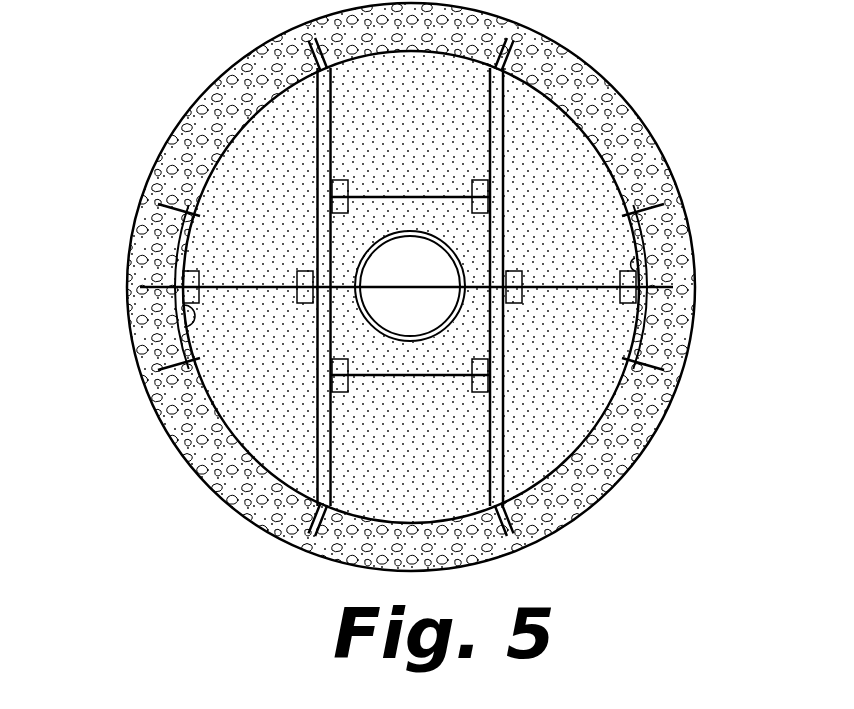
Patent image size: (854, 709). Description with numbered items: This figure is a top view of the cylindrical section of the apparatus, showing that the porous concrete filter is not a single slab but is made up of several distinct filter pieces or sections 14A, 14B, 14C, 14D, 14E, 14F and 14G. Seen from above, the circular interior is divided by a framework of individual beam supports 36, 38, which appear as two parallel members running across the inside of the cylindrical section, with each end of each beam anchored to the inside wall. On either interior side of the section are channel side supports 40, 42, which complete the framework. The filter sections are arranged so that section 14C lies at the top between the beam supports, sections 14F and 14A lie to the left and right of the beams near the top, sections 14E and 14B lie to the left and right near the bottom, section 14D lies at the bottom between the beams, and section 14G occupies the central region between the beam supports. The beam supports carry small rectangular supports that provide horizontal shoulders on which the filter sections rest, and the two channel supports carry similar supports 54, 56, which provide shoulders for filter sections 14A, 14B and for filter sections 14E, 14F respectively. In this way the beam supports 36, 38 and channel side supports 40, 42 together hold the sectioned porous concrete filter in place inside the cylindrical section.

The beam support 36 is at (506, 108).
The beam support 38 is at (313, 112).
The channel side support 40 is at (176, 250).
The channel side support 42 is at (642, 230).
The support 54 is at (183, 332).
The support 56 is at (643, 253).
The filter section 14A is at (600, 243).
The filter section 14B is at (587, 368).
The filter section 14C is at (442, 151).
The filter section 14D is at (442, 489).
The filter section 14E is at (287, 370).
The filter section 14F is at (283, 238).
The filter section 14G is at (443, 353).